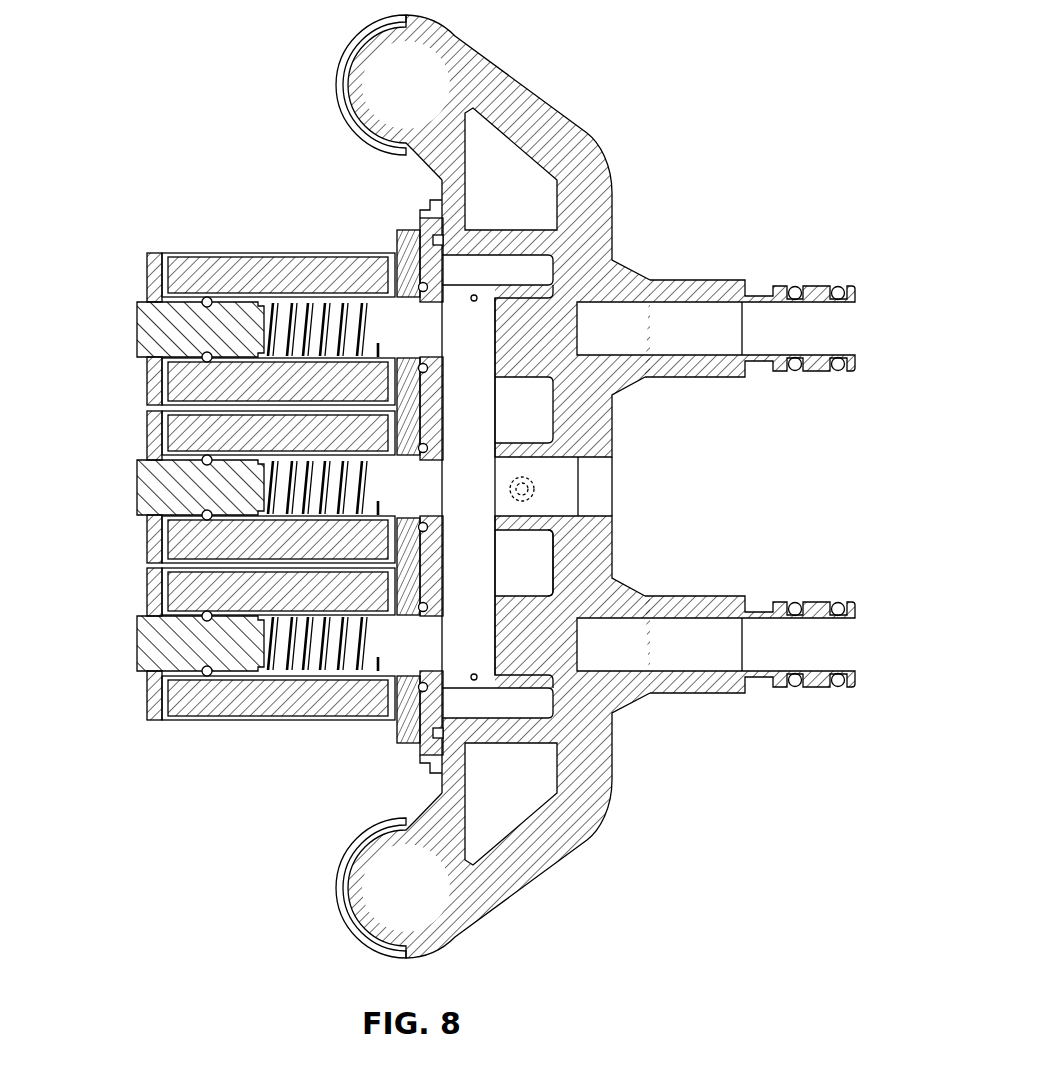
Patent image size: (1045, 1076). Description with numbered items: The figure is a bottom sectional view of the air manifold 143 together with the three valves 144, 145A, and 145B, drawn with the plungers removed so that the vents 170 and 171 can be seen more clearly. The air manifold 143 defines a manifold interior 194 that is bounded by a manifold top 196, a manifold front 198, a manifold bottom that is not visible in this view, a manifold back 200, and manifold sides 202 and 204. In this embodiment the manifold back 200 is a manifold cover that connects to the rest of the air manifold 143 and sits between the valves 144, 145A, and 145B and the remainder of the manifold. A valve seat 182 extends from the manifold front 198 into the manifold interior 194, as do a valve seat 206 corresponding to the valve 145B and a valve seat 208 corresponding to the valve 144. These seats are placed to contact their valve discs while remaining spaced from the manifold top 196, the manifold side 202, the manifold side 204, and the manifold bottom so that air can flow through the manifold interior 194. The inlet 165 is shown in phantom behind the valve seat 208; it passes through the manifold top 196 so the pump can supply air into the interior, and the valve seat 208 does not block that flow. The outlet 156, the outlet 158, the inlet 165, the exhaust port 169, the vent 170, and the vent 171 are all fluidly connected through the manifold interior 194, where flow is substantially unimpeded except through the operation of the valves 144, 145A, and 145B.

The air manifold 143 is at (599, 156).
The valve 144 is at (147, 427).
The valve 145A is at (147, 280).
The valve 145B is at (147, 590).
The outlet 156 is at (858, 327).
The outlet 158 is at (858, 645).
The inlet 165 is at (535, 485).
The exhaust port 169 is at (594, 489).
The vent 170 is at (419, 285).
The vent 171 is at (442, 648).
The valve seat 182 is at (497, 290).
The manifold interior 194 is at (514, 560).
The manifold top 196 is at (490, 498).
The manifold front 198 is at (555, 560).
The manifold back 200 is at (432, 575).
The manifold side 202 is at (471, 298).
The manifold side 204 is at (474, 674).
The valve seat 206 is at (497, 683).
The valve seat 208 is at (496, 445).